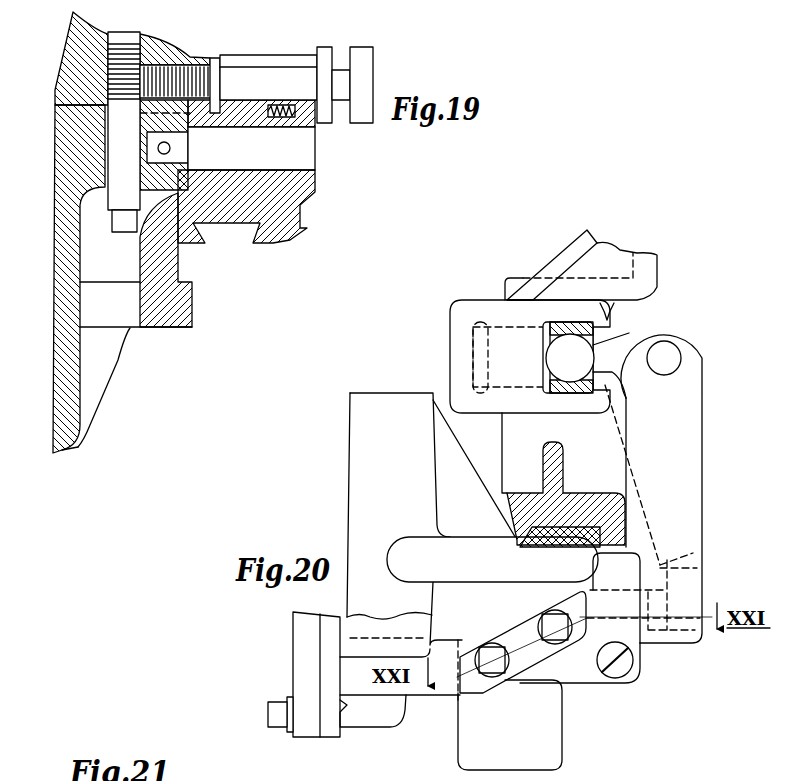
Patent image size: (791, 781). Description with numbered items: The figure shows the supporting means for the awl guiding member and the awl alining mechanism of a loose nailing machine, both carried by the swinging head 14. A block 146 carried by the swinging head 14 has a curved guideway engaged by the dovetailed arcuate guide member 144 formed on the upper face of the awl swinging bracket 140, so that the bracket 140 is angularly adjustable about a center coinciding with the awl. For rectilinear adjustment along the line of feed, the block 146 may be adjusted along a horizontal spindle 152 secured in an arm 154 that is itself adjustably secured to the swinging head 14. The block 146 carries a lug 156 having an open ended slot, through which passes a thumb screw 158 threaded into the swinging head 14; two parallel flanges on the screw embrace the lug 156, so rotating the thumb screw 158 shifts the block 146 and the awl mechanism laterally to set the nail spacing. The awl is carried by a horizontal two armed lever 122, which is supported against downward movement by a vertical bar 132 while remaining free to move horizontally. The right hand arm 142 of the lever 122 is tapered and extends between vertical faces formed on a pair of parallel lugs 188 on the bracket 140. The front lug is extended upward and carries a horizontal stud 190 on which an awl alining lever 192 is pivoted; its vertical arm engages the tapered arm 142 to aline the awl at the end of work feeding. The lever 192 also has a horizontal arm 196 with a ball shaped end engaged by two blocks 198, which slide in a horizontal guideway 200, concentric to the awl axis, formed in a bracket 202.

In FIG. 19, the swinging head 14 is at (157, 50).
In FIG. 19, the arm 154 is at (67, 165).
In FIG. 19, the lug 156 is at (247, 108).
In FIG. 19, the thumb screw 158 is at (363, 62).
In FIG. 19, the horizontal spindle 152 is at (308, 155).
In FIG. 19, the block 146 is at (283, 230).
In FIG. 20, the block 146 is at (583, 493).
In FIG. 20, the bracket 202 is at (670, 264).
In FIG. 20, the horizontal guideway 200 is at (593, 347).
In FIG. 20, the horizontal stud 190 is at (681, 358).
In FIG. 20, the blocks 198 is at (547, 378).
In FIG. 20, the horizontal arm 196 is at (613, 365).
In FIG. 20, the parallel lugs 188 is at (690, 502).
In FIG. 20, the awl alining lever 192 is at (693, 553).
In FIG. 20, the awl swinging bracket 140 is at (475, 545).
In FIG. 20, the dovetailed arcuate guide member 144 is at (563, 547).
In FIG. 20, the right hand arm 142 is at (532, 660).
In FIG. 20, the vertical bar 132 is at (300, 650).
In FIG. 20, the two armed lever 122 is at (350, 718).